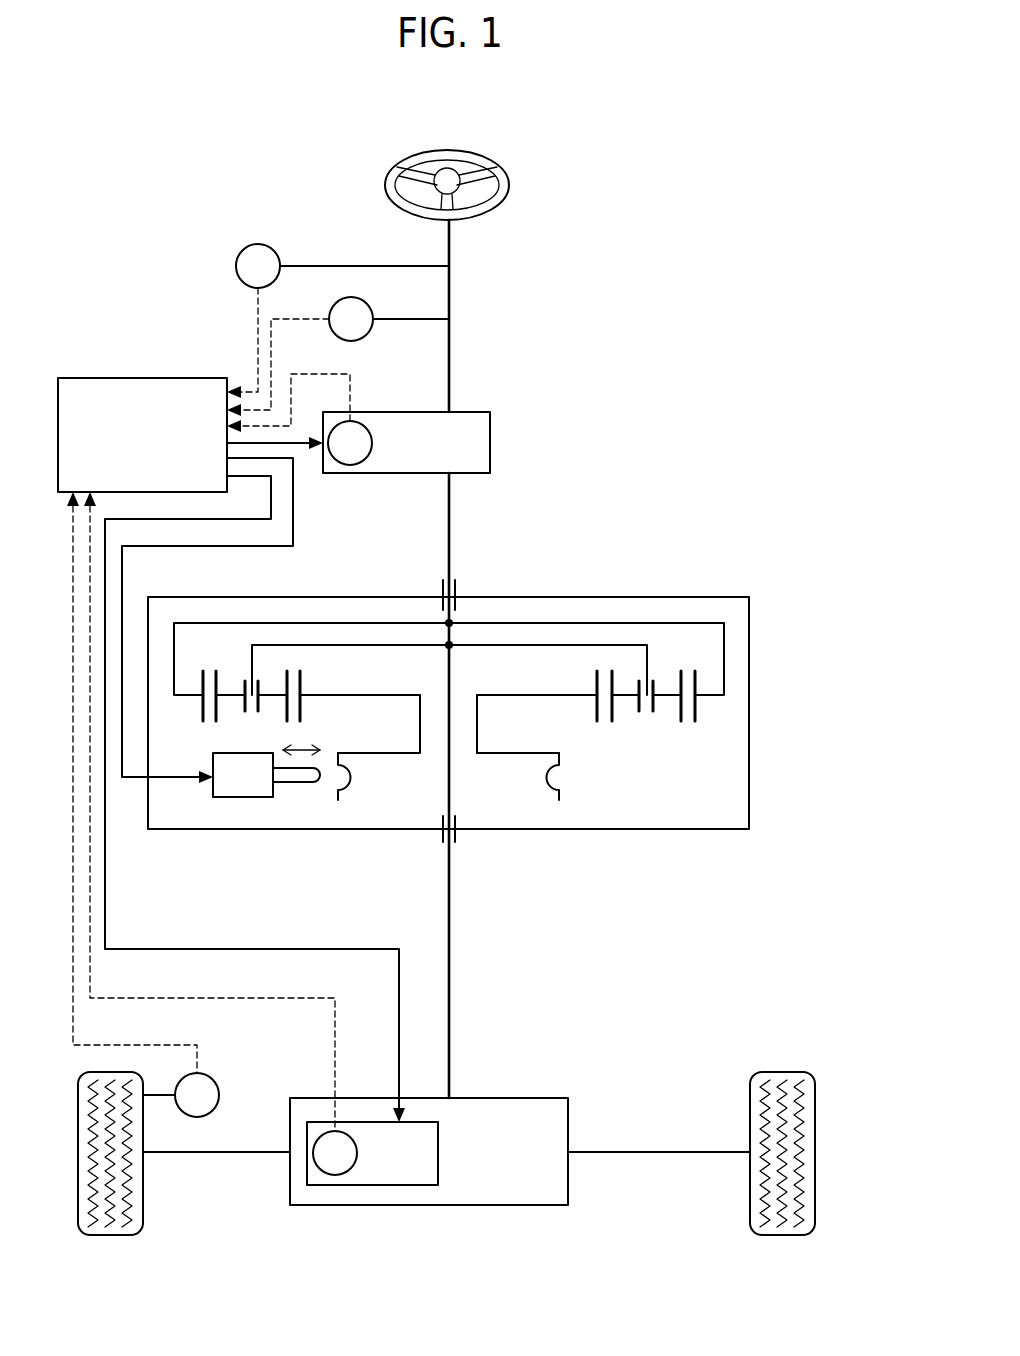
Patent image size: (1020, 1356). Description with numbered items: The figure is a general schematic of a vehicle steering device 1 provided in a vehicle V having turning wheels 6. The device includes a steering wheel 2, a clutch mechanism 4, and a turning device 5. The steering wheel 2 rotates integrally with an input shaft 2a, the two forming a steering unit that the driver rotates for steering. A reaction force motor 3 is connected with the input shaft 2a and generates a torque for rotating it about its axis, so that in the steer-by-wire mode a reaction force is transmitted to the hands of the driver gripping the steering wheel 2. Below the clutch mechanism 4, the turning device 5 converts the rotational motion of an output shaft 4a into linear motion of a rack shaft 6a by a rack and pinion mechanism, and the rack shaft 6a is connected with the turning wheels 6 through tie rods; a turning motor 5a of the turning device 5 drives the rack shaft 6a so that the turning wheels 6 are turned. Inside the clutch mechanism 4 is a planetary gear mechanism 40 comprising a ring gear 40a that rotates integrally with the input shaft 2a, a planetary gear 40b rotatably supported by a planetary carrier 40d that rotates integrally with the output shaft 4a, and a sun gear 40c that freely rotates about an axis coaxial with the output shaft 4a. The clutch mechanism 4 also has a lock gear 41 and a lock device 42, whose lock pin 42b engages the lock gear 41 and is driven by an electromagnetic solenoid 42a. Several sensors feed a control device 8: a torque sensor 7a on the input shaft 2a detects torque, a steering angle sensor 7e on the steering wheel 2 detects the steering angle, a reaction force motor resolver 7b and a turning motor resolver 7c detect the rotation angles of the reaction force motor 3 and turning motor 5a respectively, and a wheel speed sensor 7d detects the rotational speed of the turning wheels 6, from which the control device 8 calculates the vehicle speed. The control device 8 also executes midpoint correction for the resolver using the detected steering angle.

The vehicle V is at (531, 141).
The vehicle steering device 1 is at (656, 216).
The steering wheel 2 is at (509, 185).
The input shaft 2a is at (449, 300).
The reaction force motor 3 is at (492, 430).
The clutch mechanism 4 is at (730, 597).
The output shaft 4a is at (449, 978).
The turning device 5 is at (505, 1205).
The turning motor 5a is at (398, 1185).
The turning wheels 6 is at (118, 1228).
The rack shaft 6a is at (680, 1153).
The torque sensor 7a is at (365, 337).
The reaction force motor resolver 7b is at (343, 465).
The turning motor resolver 7c is at (325, 1175).
The wheel speed sensor 7d is at (217, 1082).
The steering angle sensor 7e is at (237, 260).
The control device 8 is at (188, 378).
The planetary gear mechanism 40 is at (827, 757).
The ring gear 40a is at (724, 640).
The planetary gear 40b is at (695, 712).
The sun gear 40c is at (612, 715).
The planetary carrier 40d is at (647, 655).
The lock gear 41 is at (562, 792).
The lock device 42 is at (327, 878).
The electromagnetic solenoid 42a is at (248, 797).
The lock pin 42b is at (288, 782).